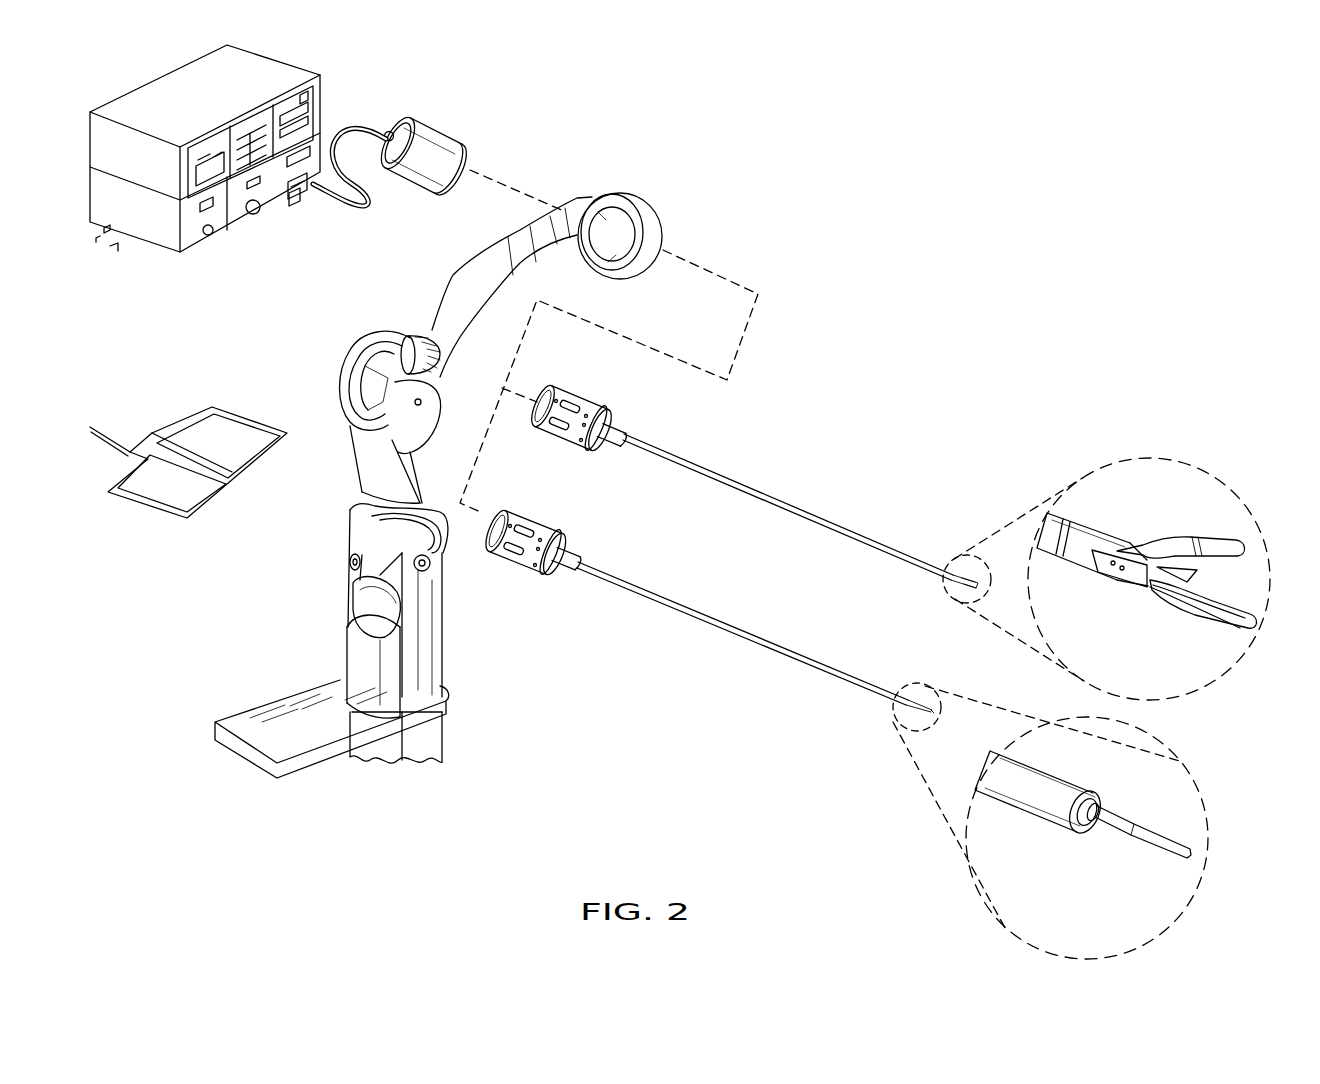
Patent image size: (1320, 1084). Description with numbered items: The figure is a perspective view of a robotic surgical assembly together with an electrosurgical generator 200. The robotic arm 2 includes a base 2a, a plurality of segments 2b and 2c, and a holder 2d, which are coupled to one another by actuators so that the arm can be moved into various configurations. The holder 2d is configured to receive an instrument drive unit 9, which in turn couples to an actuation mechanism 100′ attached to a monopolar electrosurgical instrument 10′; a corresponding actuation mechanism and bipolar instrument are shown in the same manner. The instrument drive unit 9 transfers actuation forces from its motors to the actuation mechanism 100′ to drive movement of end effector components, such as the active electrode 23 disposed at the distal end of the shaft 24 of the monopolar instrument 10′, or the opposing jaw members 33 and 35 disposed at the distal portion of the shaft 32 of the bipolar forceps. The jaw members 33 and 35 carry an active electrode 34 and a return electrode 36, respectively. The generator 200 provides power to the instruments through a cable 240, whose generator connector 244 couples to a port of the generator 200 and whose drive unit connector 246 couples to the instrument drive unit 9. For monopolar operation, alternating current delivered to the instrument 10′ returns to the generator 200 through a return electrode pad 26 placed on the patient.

The electrosurgical generator 200 is at (227, 172).
The cable 240 is at (322, 197).
The generator connector 244 is at (291, 200).
The drive unit connector 246 is at (389, 130).
The instrument drive unit 9 is at (389, 125).
The return electrode pad 26 is at (150, 512).
The robotic arm 2 is at (467, 474).
The base 2a is at (357, 648).
The segment 2b is at (364, 496).
The segment 2c is at (476, 268).
The holder 2d is at (652, 218).
The monopolar electrosurgical instrument 10′ is at (848, 704).
The actuation mechanism 100′ is at (534, 503).
The shaft 32 is at (968, 564).
The jaw member 33 is at (1217, 540).
The active electrode 34 is at (1230, 560).
The jaw member 35 is at (1220, 620).
The return electrode 36 is at (1257, 613).
The shaft 24 is at (896, 760).
The active electrode 23 is at (1170, 830).